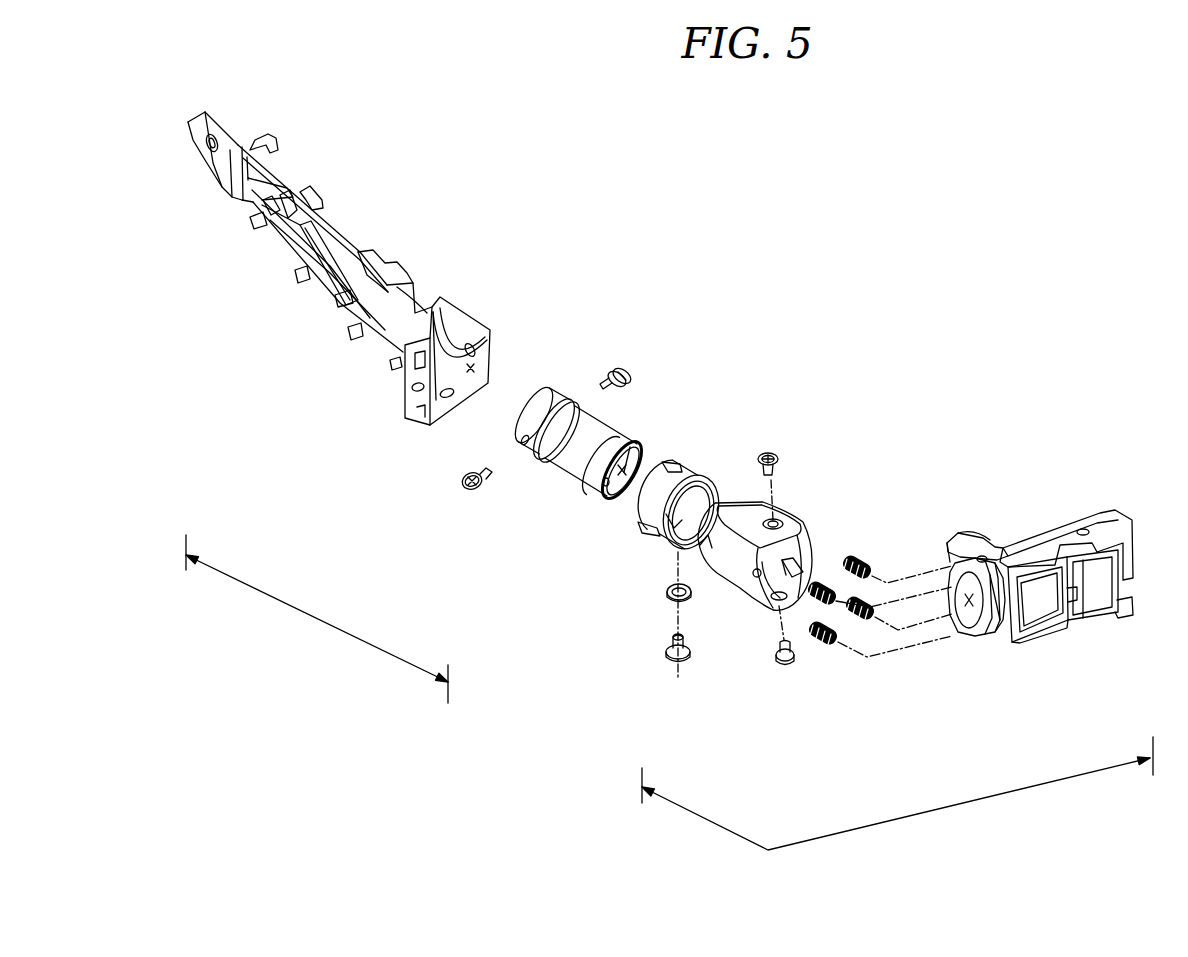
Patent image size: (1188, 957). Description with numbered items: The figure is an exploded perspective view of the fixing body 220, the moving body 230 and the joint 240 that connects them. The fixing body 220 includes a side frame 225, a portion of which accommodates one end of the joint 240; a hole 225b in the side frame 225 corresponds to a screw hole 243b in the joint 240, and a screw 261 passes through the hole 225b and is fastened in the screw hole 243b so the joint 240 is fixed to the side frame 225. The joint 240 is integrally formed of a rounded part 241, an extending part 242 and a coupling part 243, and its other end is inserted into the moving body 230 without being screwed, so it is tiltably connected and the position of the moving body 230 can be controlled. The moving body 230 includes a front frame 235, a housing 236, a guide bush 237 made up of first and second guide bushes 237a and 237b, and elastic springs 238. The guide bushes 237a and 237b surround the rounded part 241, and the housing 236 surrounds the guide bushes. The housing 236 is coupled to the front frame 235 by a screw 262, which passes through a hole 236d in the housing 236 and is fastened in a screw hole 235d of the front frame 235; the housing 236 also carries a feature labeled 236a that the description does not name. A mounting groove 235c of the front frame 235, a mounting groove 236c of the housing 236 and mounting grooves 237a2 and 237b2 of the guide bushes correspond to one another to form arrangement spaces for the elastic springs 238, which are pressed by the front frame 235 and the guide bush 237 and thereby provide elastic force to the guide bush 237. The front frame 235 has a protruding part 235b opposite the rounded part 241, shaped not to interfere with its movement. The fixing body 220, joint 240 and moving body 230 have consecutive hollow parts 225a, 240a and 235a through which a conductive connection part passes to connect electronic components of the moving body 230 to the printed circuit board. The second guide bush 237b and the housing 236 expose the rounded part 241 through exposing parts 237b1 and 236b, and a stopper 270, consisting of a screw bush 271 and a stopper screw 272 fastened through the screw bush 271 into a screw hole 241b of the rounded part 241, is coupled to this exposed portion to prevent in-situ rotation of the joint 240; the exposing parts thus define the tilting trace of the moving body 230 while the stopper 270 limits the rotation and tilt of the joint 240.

The fixing body 220 is at (317, 619).
The side frame 225 is at (293, 243).
The hollow part 225a is at (476, 368).
The hole 225b is at (408, 387).
The moving body 230 is at (897, 793).
The front frame 235 is at (1027, 594).
The hollow part 235a is at (977, 633).
The protruding part 235b is at (960, 557).
The mounting groove 235c is at (953, 622).
The screw hole 235d is at (988, 556).
The housing 236 is at (773, 516).
The housing top hole 236a is at (742, 502).
The exposing part 236b is at (767, 603).
The mounting groove 236c is at (818, 547).
The hole 236d is at (782, 603).
The guide bush 237 is at (637, 533).
The first guide bush 237a is at (615, 516).
The mounting groove 237a2 is at (645, 535).
The second guide bush 237b is at (662, 552).
The exposing part 237b1 is at (694, 550).
The mounting groove 237b2 is at (666, 547).
The elastic springs 238 is at (862, 558).
The joint 240 is at (534, 493).
The hollow part 240a is at (607, 482).
The rounded part 241 is at (596, 470).
The screw hole 241b is at (603, 470).
The extending part 242 is at (556, 462).
The coupling part 243 is at (495, 486).
The screw hole 243b is at (518, 440).
The screw 261 is at (461, 479).
The screw 262 is at (769, 452).
The stopper 270 is at (670, 657).
The screw bush 271 is at (668, 600).
The stopper screw 272 is at (688, 676).